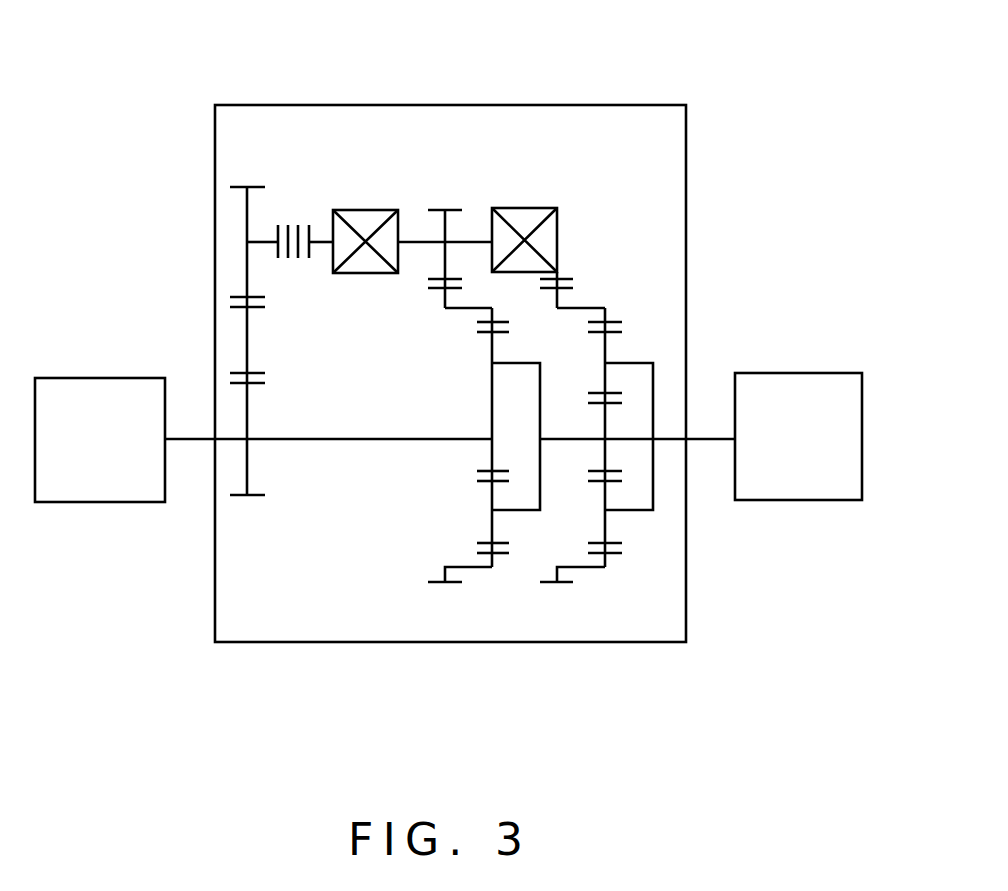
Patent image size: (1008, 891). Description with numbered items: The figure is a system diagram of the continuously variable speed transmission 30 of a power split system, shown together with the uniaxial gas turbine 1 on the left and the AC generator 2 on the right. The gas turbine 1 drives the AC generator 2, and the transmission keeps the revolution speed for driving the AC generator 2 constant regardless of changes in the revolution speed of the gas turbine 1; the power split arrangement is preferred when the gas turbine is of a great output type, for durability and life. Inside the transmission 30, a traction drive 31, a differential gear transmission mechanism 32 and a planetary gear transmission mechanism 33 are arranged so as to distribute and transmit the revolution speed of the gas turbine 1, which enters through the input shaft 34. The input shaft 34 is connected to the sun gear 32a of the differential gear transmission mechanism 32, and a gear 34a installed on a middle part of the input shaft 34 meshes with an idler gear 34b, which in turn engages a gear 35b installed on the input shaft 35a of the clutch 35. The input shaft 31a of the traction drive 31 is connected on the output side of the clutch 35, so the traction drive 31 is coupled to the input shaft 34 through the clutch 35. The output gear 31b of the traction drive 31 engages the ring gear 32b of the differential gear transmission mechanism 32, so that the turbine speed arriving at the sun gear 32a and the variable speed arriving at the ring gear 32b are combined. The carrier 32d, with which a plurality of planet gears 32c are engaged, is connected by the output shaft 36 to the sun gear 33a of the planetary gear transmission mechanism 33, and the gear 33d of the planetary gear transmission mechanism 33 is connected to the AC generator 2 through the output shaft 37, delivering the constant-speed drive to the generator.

The uniaxial gas turbine 1 is at (67, 377).
The AC generator 2 is at (787, 373).
The continuously variable speed transmission of a power split system 30 is at (568, 103).
The traction drive 31 is at (410, 154).
The input shaft of the traction drive 31a is at (322, 238).
The output gear of the traction drive 31b is at (448, 220).
The differential gear transmission mechanism 32 is at (449, 524).
The sun gear of the differential gear transmission mechanism 32a is at (492, 450).
The ring gear of the differential gear transmission mechanism 32b is at (492, 312).
The planet gears of the differential gear transmission mechanism 32c is at (492, 523).
The carrier of the differential gear transmission mechanism 32d is at (518, 512).
The planetary gear transmission mechanism 33 is at (661, 505).
The sun gear of the planetary gear transmission mechanism 33a is at (607, 409).
The gear of the planetary gear transmission mechanism 33d is at (657, 399).
The input shaft 34 is at (190, 442).
The gear on the input shaft 34a is at (250, 478).
The idler gear 34b is at (247, 341).
The clutch 35 is at (288, 215).
The input shaft of the clutch 35a is at (268, 238).
The gear on the clutch input shaft 35b is at (247, 214).
The output shaft 36 is at (569, 441).
The output shaft 37 is at (713, 441).